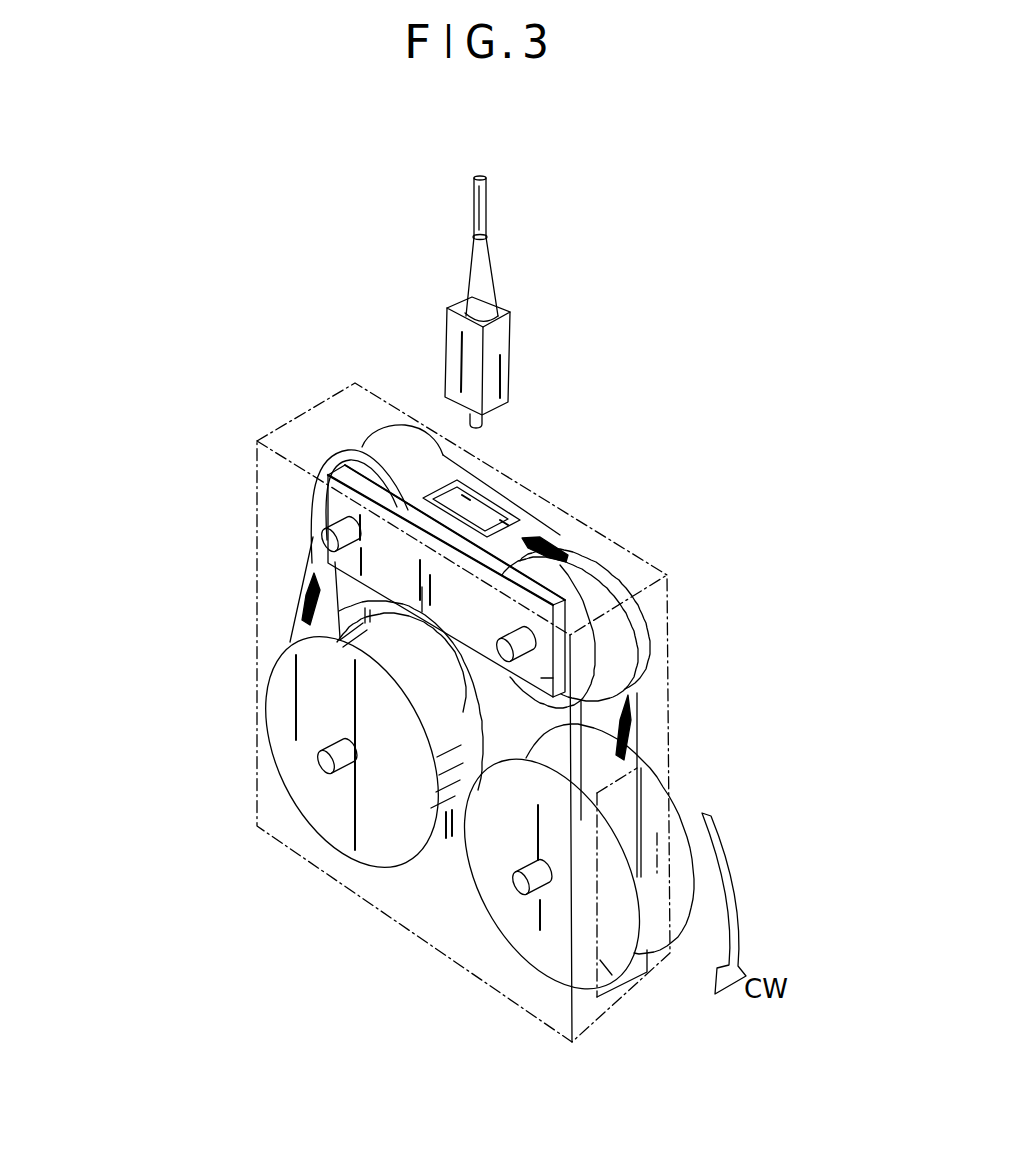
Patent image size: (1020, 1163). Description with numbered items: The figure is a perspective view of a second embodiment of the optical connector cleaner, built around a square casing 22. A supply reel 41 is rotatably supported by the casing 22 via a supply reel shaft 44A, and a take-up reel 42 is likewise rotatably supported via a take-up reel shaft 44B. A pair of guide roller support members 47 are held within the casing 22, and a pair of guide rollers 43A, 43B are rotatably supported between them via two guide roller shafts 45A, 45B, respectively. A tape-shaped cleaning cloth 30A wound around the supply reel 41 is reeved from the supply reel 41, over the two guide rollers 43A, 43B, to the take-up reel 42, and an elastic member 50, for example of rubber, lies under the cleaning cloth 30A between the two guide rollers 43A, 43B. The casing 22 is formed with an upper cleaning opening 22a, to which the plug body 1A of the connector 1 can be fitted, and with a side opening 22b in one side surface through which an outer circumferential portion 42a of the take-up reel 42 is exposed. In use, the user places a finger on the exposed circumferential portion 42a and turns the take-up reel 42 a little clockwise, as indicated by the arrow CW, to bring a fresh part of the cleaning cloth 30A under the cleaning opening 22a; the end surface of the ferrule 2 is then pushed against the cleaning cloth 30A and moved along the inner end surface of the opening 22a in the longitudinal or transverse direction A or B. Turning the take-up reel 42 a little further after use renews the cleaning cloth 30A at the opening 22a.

The connector 1 is at (533, 302).
The plug body 1A is at (493, 370).
The ferrule 2 is at (483, 423).
The square casing 22 is at (667, 574).
The upper cleaning opening 22a is at (503, 500).
The side opening 22b is at (624, 788).
The tape-shaped cleaning cloth 30A is at (577, 563).
The supply reel 41 is at (378, 838).
The take-up reel 42 is at (548, 938).
The outer circumferential portion 42a is at (620, 963).
The guide roller 43A is at (373, 433).
The guide roller 43B is at (648, 628).
The supply reel shaft 44A is at (318, 762).
The take-up reel shaft 44B is at (515, 885).
The guide roller shaft 45A is at (322, 540).
The guide roller shaft 45B is at (533, 648).
The guide roller support member 47 is at (541, 678).
The elastic member 50 is at (340, 512).
The longitudinal direction A is at (480, 512).
The transverse direction B is at (462, 497).